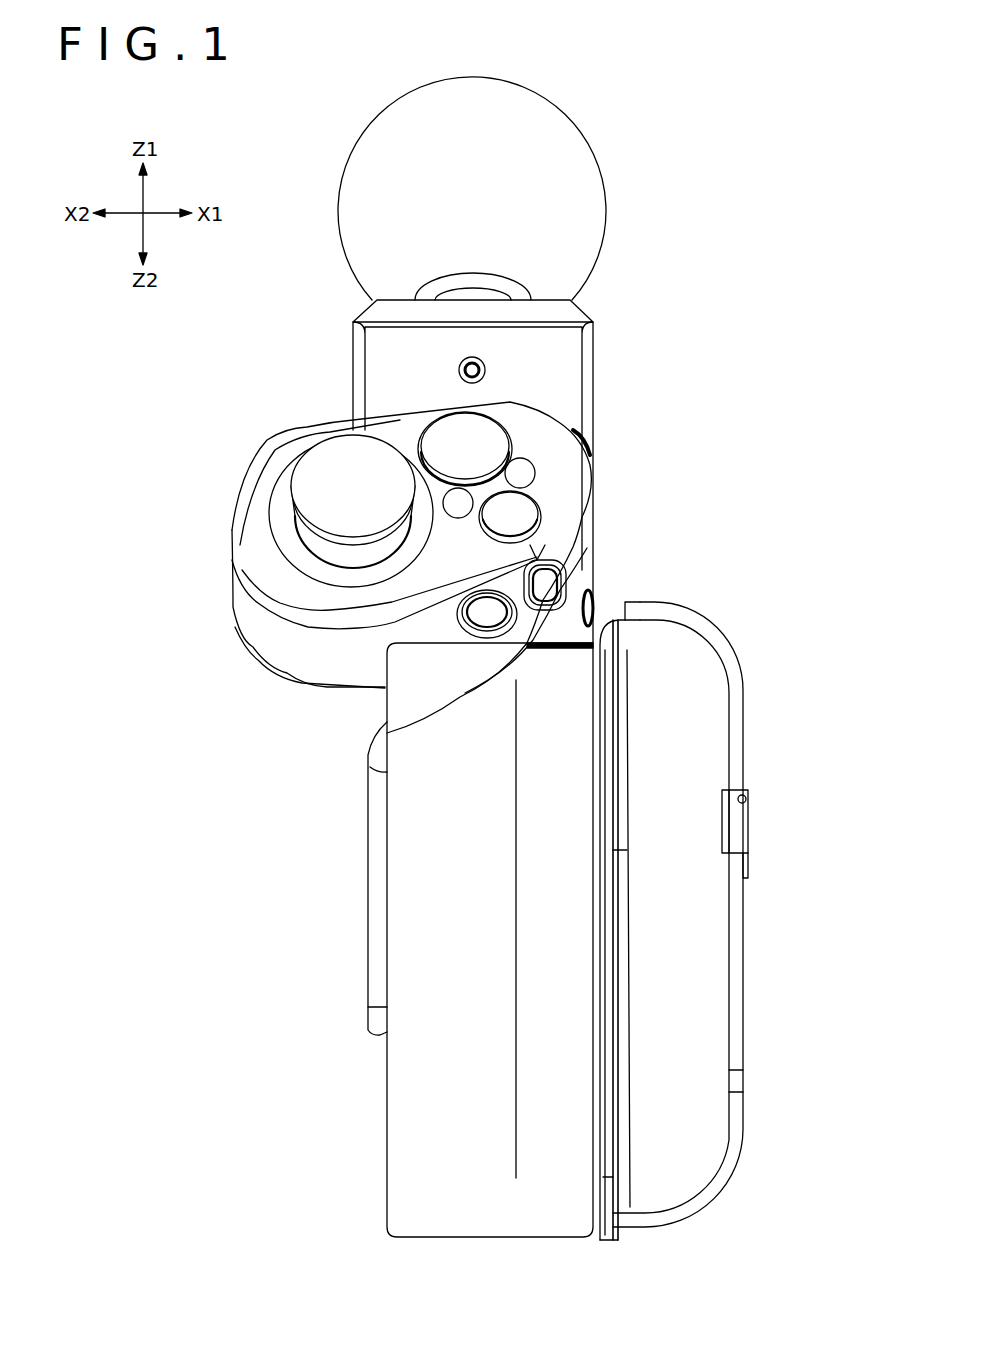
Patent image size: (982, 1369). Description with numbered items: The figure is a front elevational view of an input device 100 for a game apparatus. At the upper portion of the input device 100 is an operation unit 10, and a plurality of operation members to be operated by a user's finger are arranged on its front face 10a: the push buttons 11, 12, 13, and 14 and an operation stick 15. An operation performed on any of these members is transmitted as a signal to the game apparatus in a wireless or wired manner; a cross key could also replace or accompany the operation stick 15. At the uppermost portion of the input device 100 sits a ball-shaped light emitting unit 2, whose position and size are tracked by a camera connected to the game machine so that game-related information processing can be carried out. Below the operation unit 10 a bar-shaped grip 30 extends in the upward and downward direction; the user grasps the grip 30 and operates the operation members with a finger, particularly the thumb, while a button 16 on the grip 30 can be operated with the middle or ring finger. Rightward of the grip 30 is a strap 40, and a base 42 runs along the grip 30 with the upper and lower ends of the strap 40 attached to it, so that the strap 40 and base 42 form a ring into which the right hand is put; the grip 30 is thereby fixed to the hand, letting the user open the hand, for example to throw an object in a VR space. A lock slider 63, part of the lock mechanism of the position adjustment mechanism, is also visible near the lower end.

The input device 100 is at (719, 160).
The light emitting unit 2 is at (577, 130).
The operation unit 10 is at (600, 351).
The front face 10a is at (545, 432).
The push button 11 is at (470, 420).
The push button 12 is at (525, 506).
The push button 13 is at (550, 582).
The push button 14 is at (491, 624).
The operation stick 15 is at (318, 497).
The button 16 is at (372, 807).
The grip 30 is at (392, 1070).
The strap 40 is at (733, 664).
The base 42 is at (608, 1096).
The lock slider 63 is at (610, 1232).